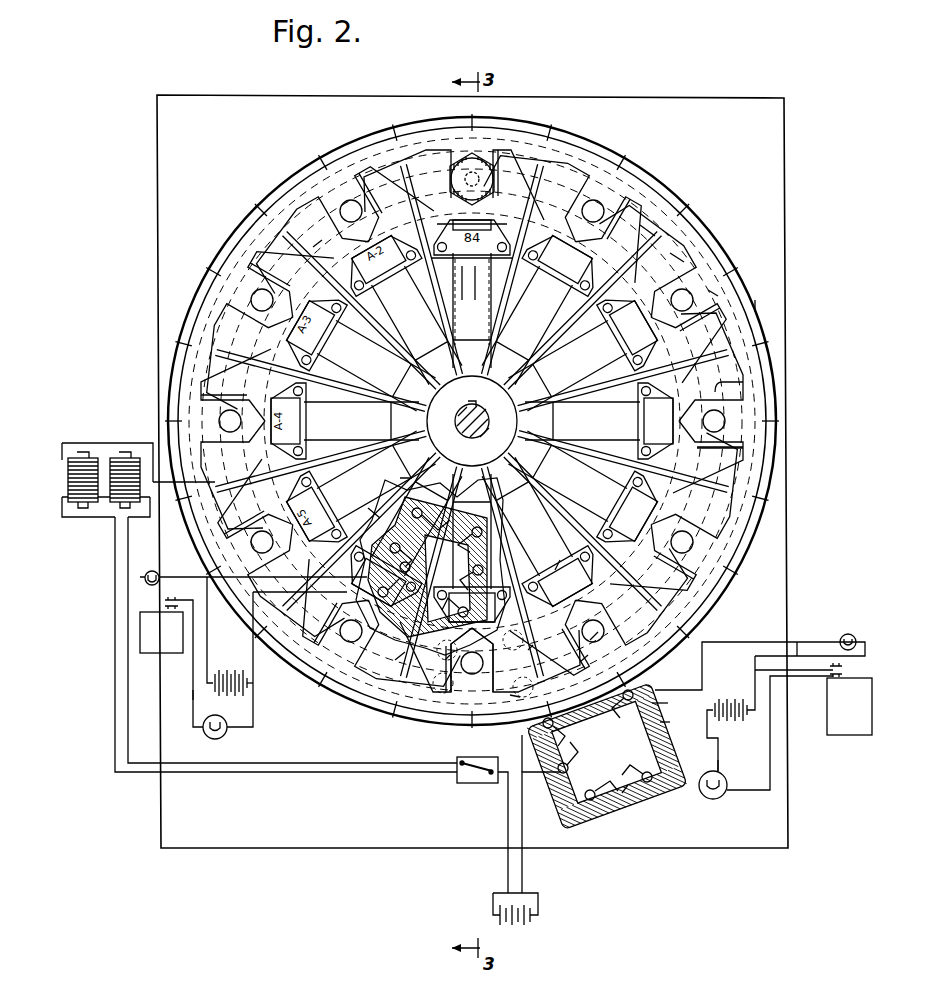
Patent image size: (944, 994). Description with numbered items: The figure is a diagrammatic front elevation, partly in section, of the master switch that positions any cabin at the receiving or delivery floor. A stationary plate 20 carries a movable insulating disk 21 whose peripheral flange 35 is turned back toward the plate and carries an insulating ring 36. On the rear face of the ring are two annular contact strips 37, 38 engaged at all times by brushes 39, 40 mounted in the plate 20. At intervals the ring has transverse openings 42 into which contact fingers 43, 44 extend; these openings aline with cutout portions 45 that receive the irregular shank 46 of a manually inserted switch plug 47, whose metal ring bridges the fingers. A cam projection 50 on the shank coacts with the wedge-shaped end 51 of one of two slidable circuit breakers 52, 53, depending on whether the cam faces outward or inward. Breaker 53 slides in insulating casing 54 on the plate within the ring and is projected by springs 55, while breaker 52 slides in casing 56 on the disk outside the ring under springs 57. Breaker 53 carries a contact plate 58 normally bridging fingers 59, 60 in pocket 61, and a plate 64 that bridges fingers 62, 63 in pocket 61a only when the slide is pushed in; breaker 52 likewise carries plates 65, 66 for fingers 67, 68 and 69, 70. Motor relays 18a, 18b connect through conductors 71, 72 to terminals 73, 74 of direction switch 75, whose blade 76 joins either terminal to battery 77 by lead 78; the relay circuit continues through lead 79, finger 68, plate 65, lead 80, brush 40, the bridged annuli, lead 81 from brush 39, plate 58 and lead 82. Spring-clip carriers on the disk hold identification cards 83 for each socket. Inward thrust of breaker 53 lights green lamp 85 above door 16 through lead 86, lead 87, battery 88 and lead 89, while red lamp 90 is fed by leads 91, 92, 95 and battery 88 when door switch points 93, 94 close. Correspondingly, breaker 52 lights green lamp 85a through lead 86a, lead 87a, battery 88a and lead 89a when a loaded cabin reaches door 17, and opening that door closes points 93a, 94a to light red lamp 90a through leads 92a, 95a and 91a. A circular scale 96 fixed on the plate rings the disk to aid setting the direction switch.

The door 16 is at (153, 652).
The door 17 is at (856, 738).
The motor actuating relay 18a is at (80, 452).
The motor actuating relay 18b is at (124, 452).
The stationary plate 20 is at (780, 170).
The movable disk 21 is at (640, 225).
The peripheral flange 35 is at (670, 253).
The insulating ring 36 is at (708, 290).
The annular contact strip 37 is at (313, 247).
The annular contact strip 38 is at (350, 163).
The brush 39 is at (528, 650).
The brush 40 is at (510, 695).
The transverse opening 42 is at (258, 296).
The contact finger 43 is at (465, 645).
The contact finger 44 is at (437, 690).
The cutout portion 45 is at (485, 204).
The shank 46 is at (487, 166).
The switch plug 47 is at (450, 181).
The cam projection 50 is at (464, 151).
The wedge-shaped end 51 is at (590, 640).
The circuit breaker 52 is at (580, 662).
The circuit breaker 53 is at (445, 660).
The insulating guide casing 54 is at (453, 566).
The spring 55 is at (462, 466).
The insulating guide casing 56 is at (607, 762).
The spring 57 is at (622, 793).
The contact plate 58 is at (465, 578).
The contact finger 59 is at (462, 560).
The contact finger 60 is at (462, 600).
The pocket 61 is at (502, 557).
The pocket 61a is at (392, 612).
The contact finger 62 is at (452, 590).
The contact finger 63 is at (372, 510).
The contact plate 64 is at (452, 620).
The contact plate 65 is at (578, 748).
The contact plate 66 is at (615, 716).
The contact finger 67 is at (568, 712).
The contact finger 68 is at (588, 766).
The contact finger 69 is at (668, 703).
The contact finger 70 is at (670, 722).
The conductor 71 is at (115, 735).
The conductor 72 is at (128, 706).
The terminal 73 is at (460, 780).
The terminal 74 is at (462, 760).
The direction-controlling switch 75 is at (488, 785).
The blade 76 is at (472, 785).
The battery 77 is at (528, 925).
The lead 78 is at (506, 870).
The lead 79 is at (524, 870).
The lead 80 is at (520, 735).
The lead 81 is at (555, 570).
The lead 82 is at (153, 440).
The identification card 83 is at (483, 300).
The green signal light 85 is at (152, 571).
The green signal lamp 85a is at (848, 633).
The lead 86 is at (195, 577).
The lead 86a is at (738, 642).
The lead 87 is at (250, 684).
The lead 87a is at (705, 740).
The battery 88 is at (218, 698).
The battery 88a is at (732, 698).
The lead 89 is at (207, 620).
The lead 89a is at (755, 658).
The red signal lamp 90 is at (224, 735).
The red signal lamp 90a is at (722, 800).
The lead 91 is at (253, 707).
The lead 91a is at (720, 760).
The lead 92 is at (198, 694).
The lead 92a is at (770, 757).
The movable switch point 93 is at (165, 606).
The switch point 93a is at (832, 680).
The stationary switch point 94 is at (165, 600).
The switch point 94a is at (845, 695).
The lead 95 is at (208, 658).
The lead 95a is at (797, 656).
The circular scale 96 is at (755, 307).